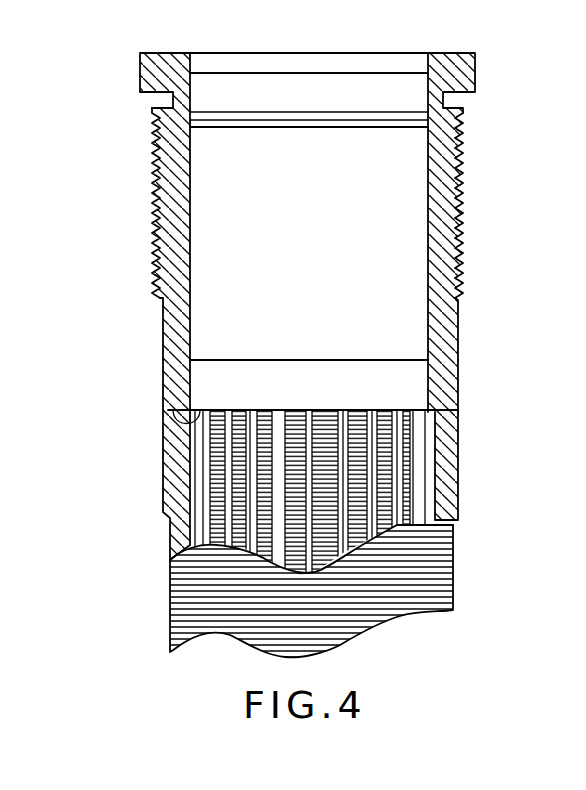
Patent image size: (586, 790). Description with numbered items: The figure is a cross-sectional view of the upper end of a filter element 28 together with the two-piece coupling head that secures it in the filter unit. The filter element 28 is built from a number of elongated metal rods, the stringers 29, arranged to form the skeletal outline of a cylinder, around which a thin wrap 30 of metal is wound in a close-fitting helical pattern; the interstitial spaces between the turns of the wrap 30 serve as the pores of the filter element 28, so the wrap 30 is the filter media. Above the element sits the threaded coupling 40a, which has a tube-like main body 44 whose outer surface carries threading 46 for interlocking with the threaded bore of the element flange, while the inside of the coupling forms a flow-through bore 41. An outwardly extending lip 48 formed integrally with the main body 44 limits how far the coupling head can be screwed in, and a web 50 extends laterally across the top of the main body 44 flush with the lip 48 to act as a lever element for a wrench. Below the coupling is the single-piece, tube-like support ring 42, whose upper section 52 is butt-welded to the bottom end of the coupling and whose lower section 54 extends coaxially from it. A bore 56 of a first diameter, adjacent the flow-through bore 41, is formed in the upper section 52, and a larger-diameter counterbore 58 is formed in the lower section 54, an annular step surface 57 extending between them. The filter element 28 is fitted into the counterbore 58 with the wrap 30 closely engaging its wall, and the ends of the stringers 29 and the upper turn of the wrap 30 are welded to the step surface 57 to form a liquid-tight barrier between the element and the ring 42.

The threaded coupling 40a is at (462, 326).
The outwardly extending lip 48 is at (470, 80).
The threading 46 is at (463, 257).
The main body 44 is at (447, 212).
The support ring 42 is at (160, 372).
The upper section 52 is at (453, 383).
The lower section 54 is at (462, 433).
The web 50 is at (298, 107).
The flow-through bore 41 is at (306, 228).
The bore 56 is at (372, 368).
The stringers 29 is at (345, 410).
The counterbore 58 is at (420, 432).
The annular step surface 57 is at (200, 412).
The wrap 30 is at (455, 548).
The filter element 28 is at (432, 597).